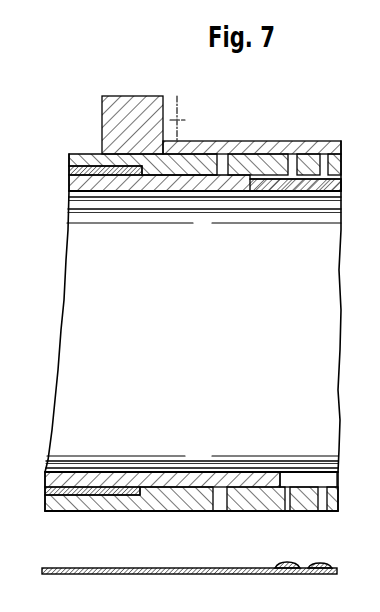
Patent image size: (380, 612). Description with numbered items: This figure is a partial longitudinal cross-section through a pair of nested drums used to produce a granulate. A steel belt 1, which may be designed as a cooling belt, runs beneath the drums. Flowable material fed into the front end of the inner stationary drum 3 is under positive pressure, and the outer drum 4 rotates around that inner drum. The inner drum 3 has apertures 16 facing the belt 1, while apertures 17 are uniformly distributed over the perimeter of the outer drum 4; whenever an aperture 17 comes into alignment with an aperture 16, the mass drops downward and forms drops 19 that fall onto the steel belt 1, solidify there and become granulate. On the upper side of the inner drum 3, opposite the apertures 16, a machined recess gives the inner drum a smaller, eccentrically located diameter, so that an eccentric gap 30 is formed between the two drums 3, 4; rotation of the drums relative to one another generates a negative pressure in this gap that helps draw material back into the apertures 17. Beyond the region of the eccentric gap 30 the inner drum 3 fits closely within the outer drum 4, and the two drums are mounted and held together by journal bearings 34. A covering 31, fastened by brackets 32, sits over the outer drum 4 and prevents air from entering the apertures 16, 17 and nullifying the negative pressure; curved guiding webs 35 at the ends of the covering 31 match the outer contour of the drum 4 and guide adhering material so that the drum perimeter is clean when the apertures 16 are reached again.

The steel belt 1 is at (226, 576).
The inner stationary drum 3 is at (185, 180).
The outer rotating drum 4 is at (85, 158).
The apertures of the inner drum 16 is at (305, 480).
The apertures of the outer drum 17 is at (293, 158).
The drops 19 is at (288, 565).
The eccentric gap 30 is at (304, 181).
The covering 31 is at (276, 147).
The brackets 32 is at (188, 116).
The journal bearings 34 is at (70, 172).
The curved guiding webs 35 is at (144, 95).